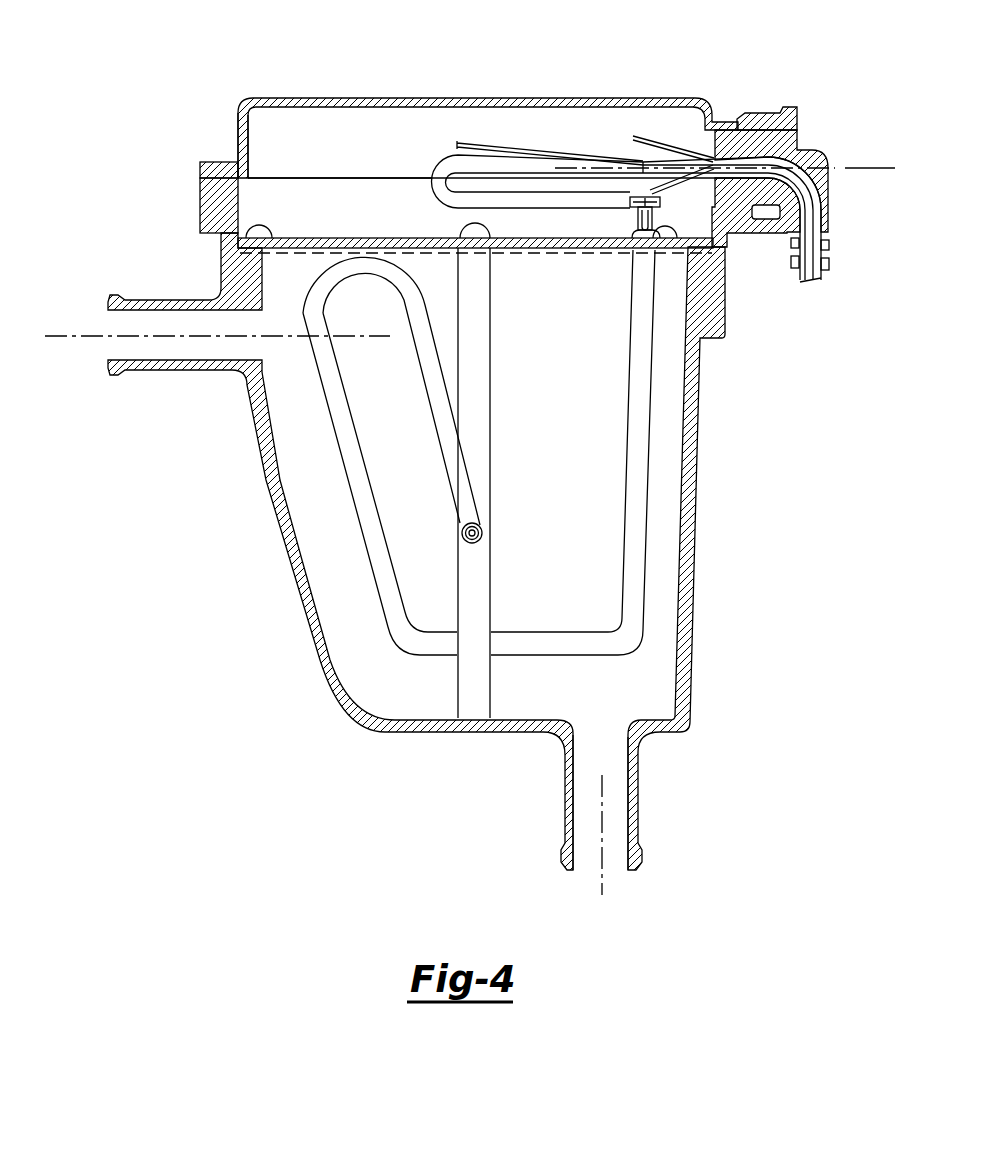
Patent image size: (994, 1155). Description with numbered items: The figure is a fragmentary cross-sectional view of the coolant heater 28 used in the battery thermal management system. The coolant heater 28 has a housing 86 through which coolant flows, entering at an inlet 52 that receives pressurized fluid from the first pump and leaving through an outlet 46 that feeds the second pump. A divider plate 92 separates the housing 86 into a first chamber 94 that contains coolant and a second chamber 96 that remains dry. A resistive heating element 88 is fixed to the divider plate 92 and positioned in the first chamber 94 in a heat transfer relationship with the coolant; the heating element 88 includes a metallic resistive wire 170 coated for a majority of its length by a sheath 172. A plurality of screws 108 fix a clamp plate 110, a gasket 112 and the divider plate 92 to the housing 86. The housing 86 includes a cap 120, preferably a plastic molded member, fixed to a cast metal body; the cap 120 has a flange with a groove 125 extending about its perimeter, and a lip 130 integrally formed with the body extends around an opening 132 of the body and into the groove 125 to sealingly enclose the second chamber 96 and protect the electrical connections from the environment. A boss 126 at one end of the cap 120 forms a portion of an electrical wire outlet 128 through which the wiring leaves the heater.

The coolant heater 28 is at (258, 527).
The outlet 46 is at (120, 313).
The inlet 52 is at (612, 858).
The housing 86 is at (196, 208).
The resistive heating element 88 is at (416, 395).
The divider plate 92 is at (552, 250).
The first chamber 94 is at (322, 476).
The second chamber 96 is at (370, 141).
The screws 108 is at (270, 232).
The clamp plate 110 is at (380, 237).
The gasket 112 is at (706, 251).
The cap 120 is at (412, 97).
The groove 125 is at (238, 186).
The boss 126 is at (746, 112).
The electrical wire outlet 128 is at (800, 106).
The lip 130 is at (200, 163).
The opening 132 is at (266, 170).
The metallic resistive wire 170 is at (482, 540).
The sheath 172 is at (480, 528).